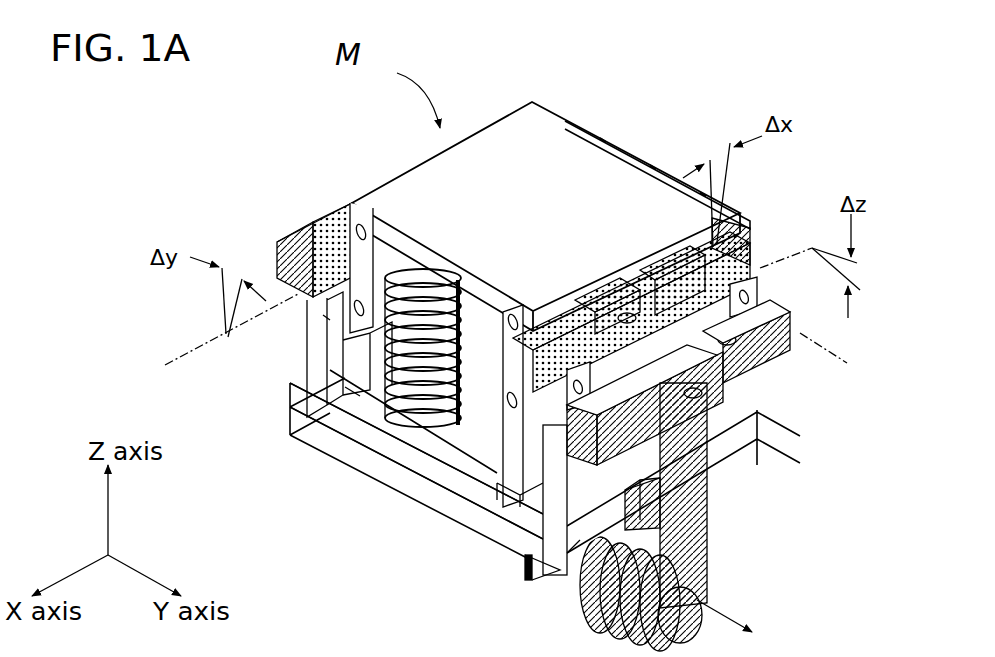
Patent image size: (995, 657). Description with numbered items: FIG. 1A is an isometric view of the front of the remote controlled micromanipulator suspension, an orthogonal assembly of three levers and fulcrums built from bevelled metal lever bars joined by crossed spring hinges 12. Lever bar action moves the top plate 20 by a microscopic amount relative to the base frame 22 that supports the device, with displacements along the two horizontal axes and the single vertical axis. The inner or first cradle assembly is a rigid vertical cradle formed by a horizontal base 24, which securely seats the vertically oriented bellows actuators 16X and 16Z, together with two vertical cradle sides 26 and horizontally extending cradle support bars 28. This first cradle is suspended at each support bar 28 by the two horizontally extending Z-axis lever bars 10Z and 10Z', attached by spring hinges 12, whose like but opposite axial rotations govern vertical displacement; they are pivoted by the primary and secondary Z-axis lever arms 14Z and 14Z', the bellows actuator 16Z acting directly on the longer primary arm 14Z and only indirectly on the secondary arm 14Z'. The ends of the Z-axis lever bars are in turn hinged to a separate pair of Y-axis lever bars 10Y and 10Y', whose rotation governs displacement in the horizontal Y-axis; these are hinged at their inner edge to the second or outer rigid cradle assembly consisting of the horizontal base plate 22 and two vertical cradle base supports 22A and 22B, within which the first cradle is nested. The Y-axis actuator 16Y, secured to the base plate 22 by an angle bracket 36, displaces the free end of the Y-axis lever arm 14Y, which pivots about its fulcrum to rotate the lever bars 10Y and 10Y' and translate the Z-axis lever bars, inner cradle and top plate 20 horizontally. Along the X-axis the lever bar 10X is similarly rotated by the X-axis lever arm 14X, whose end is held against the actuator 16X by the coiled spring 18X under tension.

The top plate 20 is at (522, 148).
The X-axis lever bar 10X is at (590, 123).
The auxiliary Y-axis lever bar 10Y' is at (270, 241).
The Z-axis lever bar 10Z is at (298, 214).
The crossed spring hinge 12 is at (352, 203).
The X-axis lever arm 14X is at (410, 280).
The X-axis actuator 16X is at (362, 378).
The coiled spring 18X is at (437, 443).
The base frame 22 is at (437, 483).
The vertical cradle base support 22A is at (323, 360).
The vertical cradle base support 22B is at (541, 541).
The horizontal base 24 is at (433, 443).
The vertical cradle side 26 is at (345, 387).
The cradle support bar 28 is at (323, 315).
The angle bracket 36 is at (527, 577).
The primary Z-axis lever arm 14Z is at (631, 296).
The secondary Z-axis lever arm 14Z' is at (566, 288).
The Z-axis actuator 16Z is at (653, 270).
The Y-axis lever bar 10Y is at (710, 409).
The Z-axis lever bar 10Z' is at (781, 355).
The primary Y-axis lever arm 14Y is at (700, 515).
The Y-axis actuator 16Y is at (597, 597).